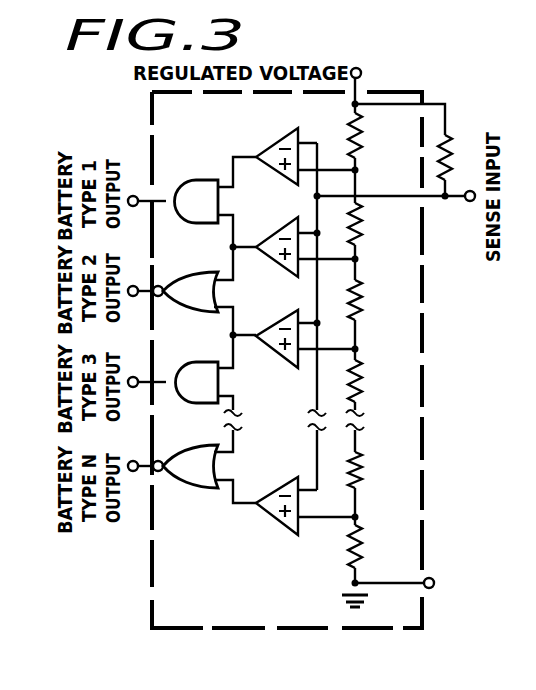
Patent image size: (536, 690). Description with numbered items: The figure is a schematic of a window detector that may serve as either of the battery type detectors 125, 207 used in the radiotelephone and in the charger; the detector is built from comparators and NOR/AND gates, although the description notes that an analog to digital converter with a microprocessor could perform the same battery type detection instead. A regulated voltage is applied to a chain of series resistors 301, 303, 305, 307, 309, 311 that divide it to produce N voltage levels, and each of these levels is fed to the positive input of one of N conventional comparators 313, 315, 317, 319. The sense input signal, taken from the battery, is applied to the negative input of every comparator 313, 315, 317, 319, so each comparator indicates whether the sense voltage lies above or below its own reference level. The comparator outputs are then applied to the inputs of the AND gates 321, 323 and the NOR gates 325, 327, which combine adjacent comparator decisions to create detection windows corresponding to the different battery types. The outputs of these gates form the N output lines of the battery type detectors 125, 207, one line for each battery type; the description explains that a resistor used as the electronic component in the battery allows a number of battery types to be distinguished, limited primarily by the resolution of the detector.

The battery type detector 125 is at (238, 358).
The battery type detector 207 is at (141, 112).
The resistor 301 is at (363, 143).
The resistor 303 is at (363, 230).
The resistor 305 is at (363, 305).
The resistor 307 is at (363, 384).
The resistor 309 is at (363, 474).
The resistor 311 is at (363, 549).
The comparator 313 is at (281, 141).
The comparator 315 is at (281, 231).
The comparator 317 is at (281, 322).
The comparator 319 is at (281, 491).
The AND gate 321 is at (208, 178).
The AND gate 323 is at (208, 360).
The NOR gate 325 is at (208, 269).
The NOR gate 327 is at (208, 443).